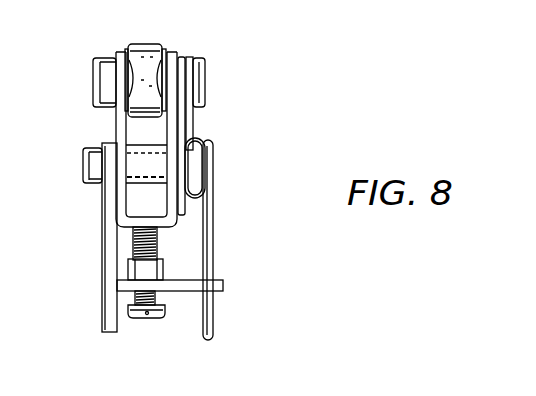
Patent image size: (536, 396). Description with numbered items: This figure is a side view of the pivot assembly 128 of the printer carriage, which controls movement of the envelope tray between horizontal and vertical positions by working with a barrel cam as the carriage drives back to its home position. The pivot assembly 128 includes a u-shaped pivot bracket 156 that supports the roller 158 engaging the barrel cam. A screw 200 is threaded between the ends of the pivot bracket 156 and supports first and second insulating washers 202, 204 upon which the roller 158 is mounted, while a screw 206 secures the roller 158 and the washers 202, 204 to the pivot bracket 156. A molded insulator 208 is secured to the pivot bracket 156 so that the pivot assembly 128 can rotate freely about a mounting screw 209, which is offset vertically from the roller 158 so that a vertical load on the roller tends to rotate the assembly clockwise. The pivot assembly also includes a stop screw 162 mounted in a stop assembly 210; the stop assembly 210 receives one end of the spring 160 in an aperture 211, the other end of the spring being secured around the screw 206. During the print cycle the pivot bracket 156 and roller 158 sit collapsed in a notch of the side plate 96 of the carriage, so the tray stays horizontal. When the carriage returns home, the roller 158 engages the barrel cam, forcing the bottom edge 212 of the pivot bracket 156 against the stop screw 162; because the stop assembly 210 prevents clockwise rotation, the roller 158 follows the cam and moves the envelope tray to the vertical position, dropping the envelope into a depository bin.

The side plate 96 is at (107, 222).
The pivot assembly 128 is at (258, 296).
The u-shaped pivot bracket 156 is at (168, 230).
The roller 158 is at (142, 44).
The spring 160 is at (213, 230).
The stop screw 162 is at (148, 318).
The screw 200 is at (92, 77).
The first insulating washer 202 is at (132, 50).
The second insulating washer 204 is at (164, 53).
The screw 206 is at (207, 78).
The molded insulator 208 is at (90, 163).
The mounting screw 209 is at (217, 165).
The stop assembly 210 is at (198, 272).
The aperture 211 is at (215, 280).
The bottom edge 212 is at (131, 232).